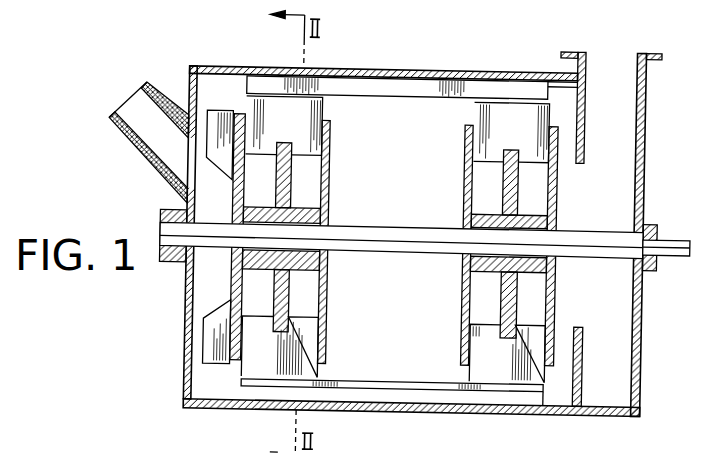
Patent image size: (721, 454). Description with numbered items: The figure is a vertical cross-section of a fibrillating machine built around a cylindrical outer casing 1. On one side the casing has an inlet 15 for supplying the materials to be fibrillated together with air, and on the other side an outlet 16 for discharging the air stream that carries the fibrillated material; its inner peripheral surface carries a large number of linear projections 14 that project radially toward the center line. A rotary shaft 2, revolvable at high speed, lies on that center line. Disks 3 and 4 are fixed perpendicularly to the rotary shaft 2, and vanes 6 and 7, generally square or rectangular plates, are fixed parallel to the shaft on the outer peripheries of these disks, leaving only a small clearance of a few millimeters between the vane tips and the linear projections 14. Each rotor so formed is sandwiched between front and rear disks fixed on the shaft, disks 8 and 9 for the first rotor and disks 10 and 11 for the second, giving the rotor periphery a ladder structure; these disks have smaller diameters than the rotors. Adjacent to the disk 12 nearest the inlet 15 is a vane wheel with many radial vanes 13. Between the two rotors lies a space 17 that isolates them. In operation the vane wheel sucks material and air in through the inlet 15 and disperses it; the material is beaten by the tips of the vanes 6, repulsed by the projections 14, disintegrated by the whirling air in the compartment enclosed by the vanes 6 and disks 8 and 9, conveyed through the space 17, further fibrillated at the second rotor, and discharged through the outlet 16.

The cylindrical outer casing 1 is at (456, 70).
The rotary shaft 2 is at (667, 239).
The disk 3 is at (278, 147).
The disk 4 is at (505, 145).
The vanes 6 is at (245, 374).
The vanes 7 is at (490, 366).
The disk 8 is at (245, 336).
The disk 9 is at (327, 323).
The disk 10 is at (463, 285).
The disk 11 is at (556, 302).
The disk 12 is at (233, 114).
The vanes 13 is at (214, 341).
The linear projections 14 is at (360, 87).
The inlet 15 is at (134, 111).
The outlet 16 is at (607, 30).
The space 17 is at (408, 150).